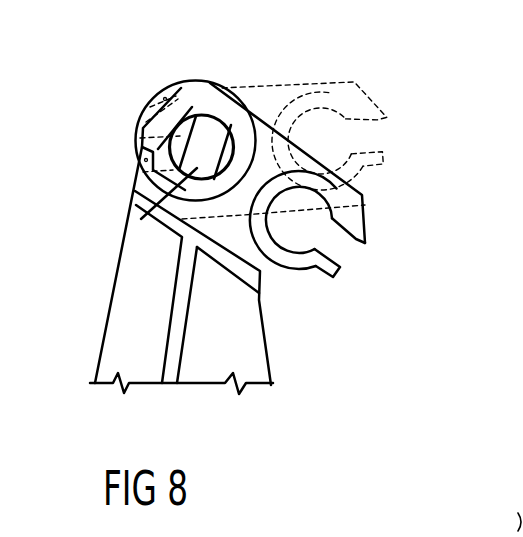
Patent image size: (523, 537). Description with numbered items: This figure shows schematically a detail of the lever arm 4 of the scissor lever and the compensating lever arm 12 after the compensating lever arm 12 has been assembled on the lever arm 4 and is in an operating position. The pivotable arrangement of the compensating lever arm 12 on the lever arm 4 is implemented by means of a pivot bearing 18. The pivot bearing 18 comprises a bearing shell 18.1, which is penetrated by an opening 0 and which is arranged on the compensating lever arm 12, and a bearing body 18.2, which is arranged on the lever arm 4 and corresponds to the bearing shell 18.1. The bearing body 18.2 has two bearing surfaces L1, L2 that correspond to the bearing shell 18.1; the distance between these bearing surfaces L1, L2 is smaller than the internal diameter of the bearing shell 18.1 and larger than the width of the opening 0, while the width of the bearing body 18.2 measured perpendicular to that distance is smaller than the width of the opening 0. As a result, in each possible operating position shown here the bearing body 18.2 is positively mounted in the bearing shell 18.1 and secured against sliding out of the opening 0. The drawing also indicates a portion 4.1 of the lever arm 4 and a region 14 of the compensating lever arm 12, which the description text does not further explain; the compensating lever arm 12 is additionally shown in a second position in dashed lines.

The lever arm 4 is at (180, 240).
The arm flange 4.1 is at (128, 342).
The opening 0 is at (165, 99).
The bearing surface L1 is at (197, 114).
The bearing surface L2 is at (140, 220).
The pivot bearing 18 is at (169, 131).
The bearing shell 18.1 is at (215, 130).
The bearing body 18.2 is at (190, 171).
The compensating lever arm 12 is at (340, 180).
The clip jaw 14 is at (372, 140).